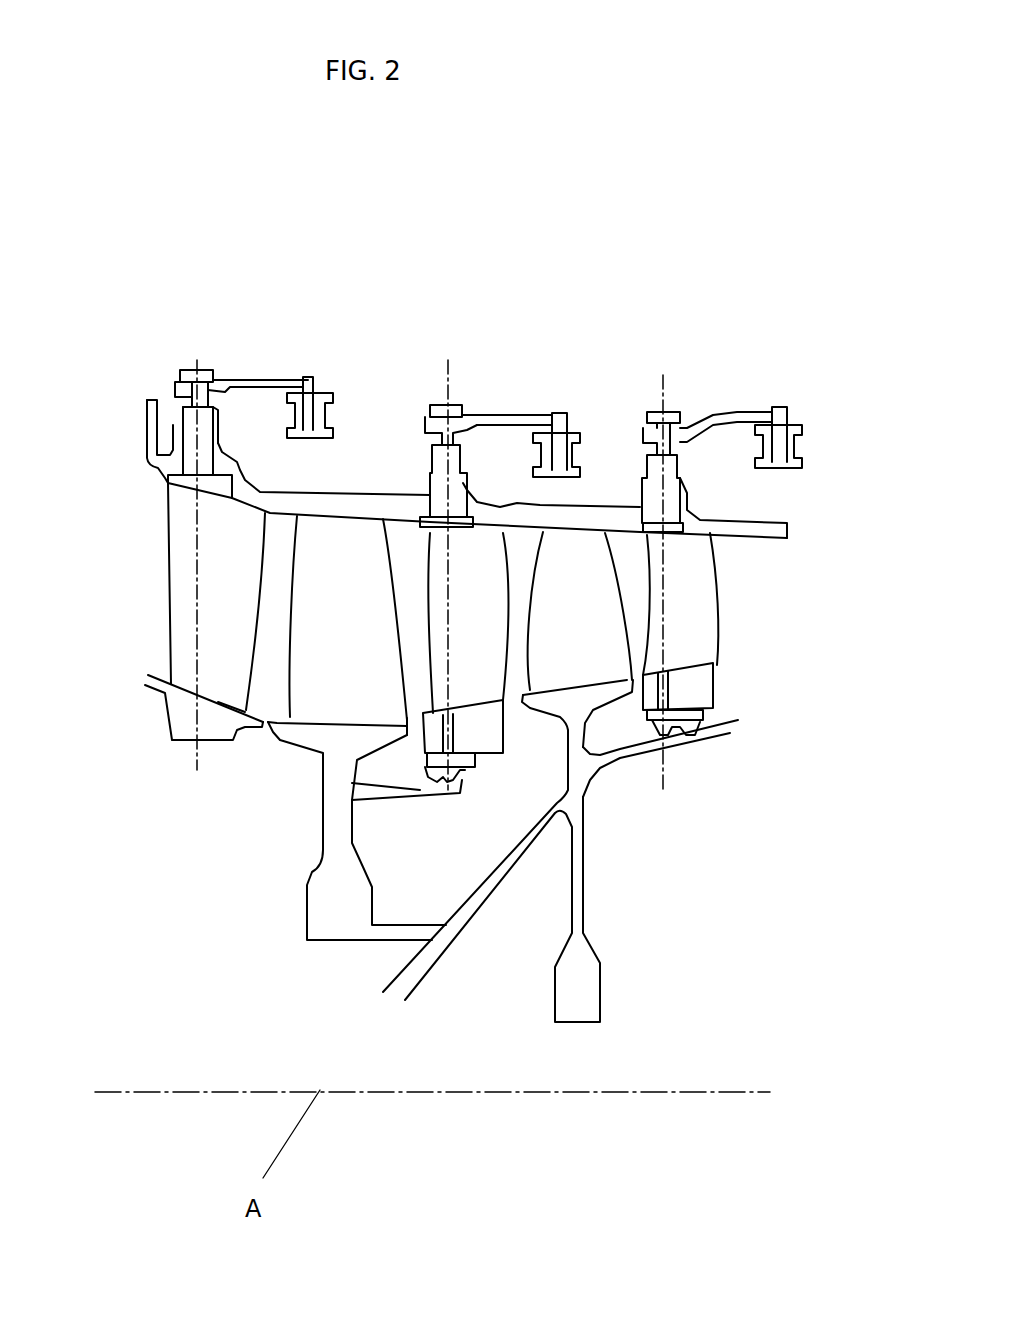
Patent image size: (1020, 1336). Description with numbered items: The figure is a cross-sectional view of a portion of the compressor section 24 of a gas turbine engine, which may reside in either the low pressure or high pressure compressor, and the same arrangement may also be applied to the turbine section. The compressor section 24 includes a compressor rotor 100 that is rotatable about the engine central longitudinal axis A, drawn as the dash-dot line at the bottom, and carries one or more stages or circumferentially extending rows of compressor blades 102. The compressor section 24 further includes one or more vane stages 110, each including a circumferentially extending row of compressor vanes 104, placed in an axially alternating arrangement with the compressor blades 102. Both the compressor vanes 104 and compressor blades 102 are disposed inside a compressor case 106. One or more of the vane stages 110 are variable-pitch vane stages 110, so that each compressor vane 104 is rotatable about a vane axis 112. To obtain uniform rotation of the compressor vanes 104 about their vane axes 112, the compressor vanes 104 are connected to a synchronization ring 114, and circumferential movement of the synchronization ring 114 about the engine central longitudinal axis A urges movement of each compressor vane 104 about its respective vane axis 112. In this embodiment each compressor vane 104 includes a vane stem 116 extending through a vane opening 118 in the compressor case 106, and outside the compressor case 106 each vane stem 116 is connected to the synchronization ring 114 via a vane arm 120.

The compressor section 24 is at (678, 218).
The compressor rotor 100 is at (322, 760).
The compressor blades 102 is at (365, 638).
The compressor vanes 104 is at (253, 601).
The compressor case 106 is at (608, 515).
The vane stages 110 is at (182, 288).
The vane axis 112 is at (197, 555).
The synchronization ring 114 is at (325, 393).
The vane stem 116 is at (183, 430).
The vane opening 118 is at (183, 442).
The vane arm 120 is at (248, 377).